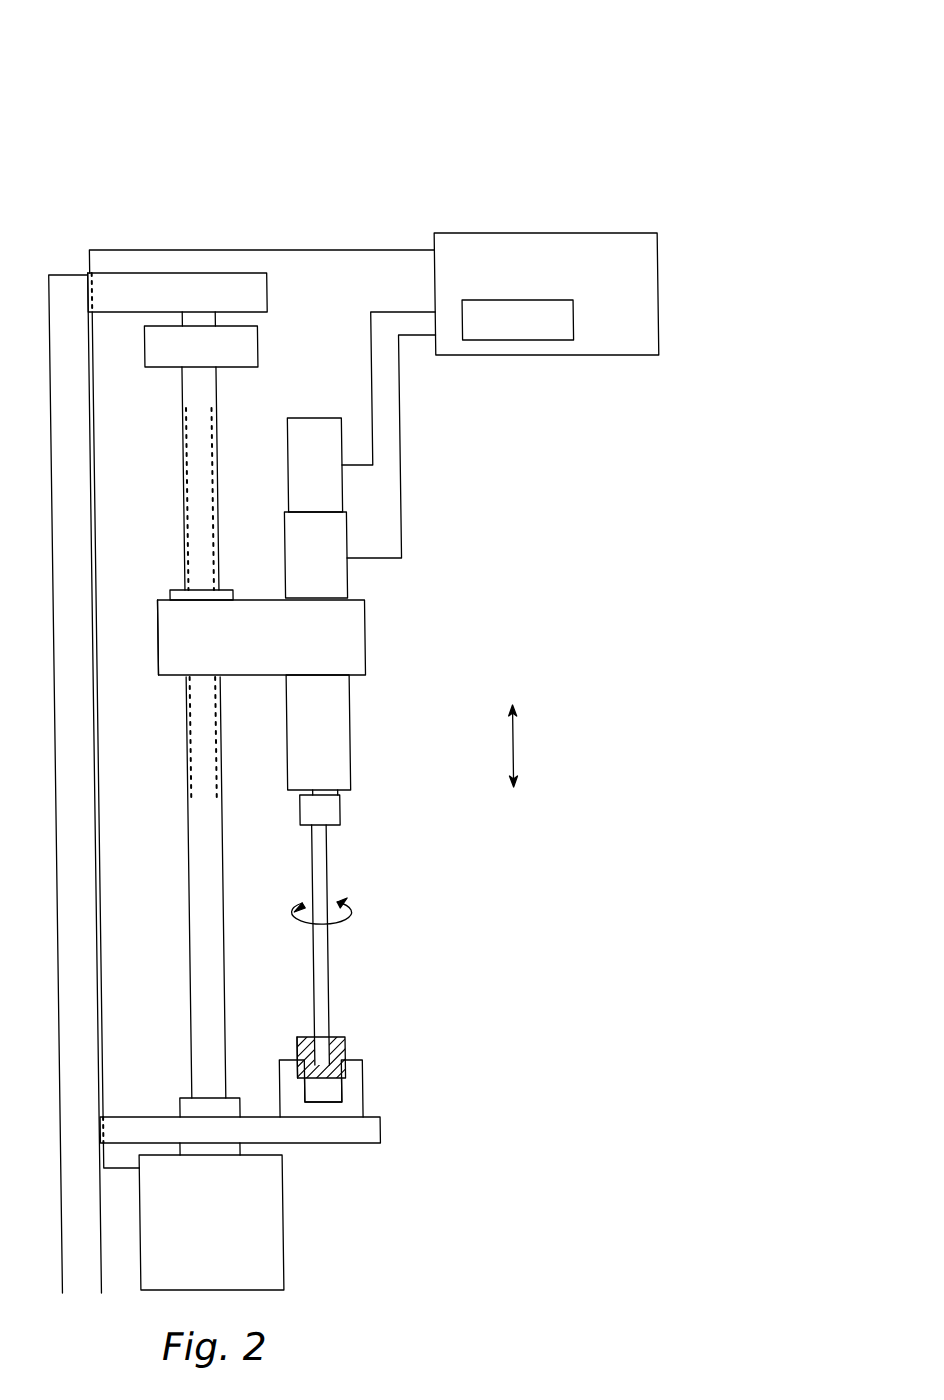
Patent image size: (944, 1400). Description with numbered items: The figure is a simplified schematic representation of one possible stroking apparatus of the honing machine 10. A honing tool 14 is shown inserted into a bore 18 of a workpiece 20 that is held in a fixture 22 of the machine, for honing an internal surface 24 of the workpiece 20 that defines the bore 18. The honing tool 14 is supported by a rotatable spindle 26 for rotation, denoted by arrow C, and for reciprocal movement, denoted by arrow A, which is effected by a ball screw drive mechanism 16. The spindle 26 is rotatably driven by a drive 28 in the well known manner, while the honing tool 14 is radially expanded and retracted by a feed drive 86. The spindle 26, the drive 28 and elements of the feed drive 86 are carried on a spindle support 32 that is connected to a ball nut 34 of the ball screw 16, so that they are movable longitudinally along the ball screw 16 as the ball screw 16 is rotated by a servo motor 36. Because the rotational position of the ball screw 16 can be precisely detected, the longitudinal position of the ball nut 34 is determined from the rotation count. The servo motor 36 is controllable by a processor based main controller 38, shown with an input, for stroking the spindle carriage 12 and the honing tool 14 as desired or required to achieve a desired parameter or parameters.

The honing machine 10 is at (504, 113).
The spindle carriage 12 is at (359, 638).
The honing tool 14 is at (315, 975).
The ball screw drive mechanism 16 is at (141, 677).
The bore 18 is at (281, 1068).
The workpiece 20 is at (331, 1043).
The fixture 22 is at (348, 1083).
The internal surface 24 is at (308, 1070).
The rotatable spindle 26 is at (329, 810).
The drive 28 is at (340, 582).
The spindle support 32 is at (356, 668).
The ball nut 34 is at (164, 590).
The servo motor 36 is at (266, 1253).
The main controller 38 is at (580, 355).
The feed drive 86 is at (307, 418).
The arrow A is at (505, 745).
The arrow C is at (338, 912).